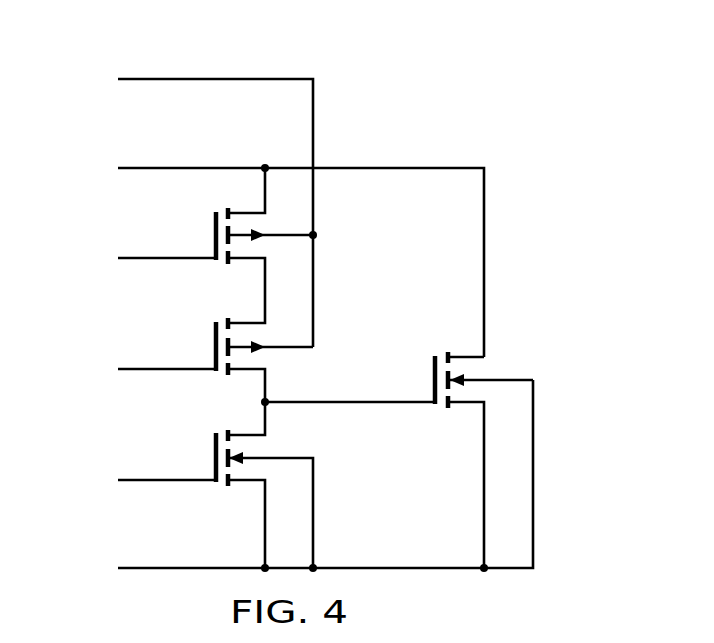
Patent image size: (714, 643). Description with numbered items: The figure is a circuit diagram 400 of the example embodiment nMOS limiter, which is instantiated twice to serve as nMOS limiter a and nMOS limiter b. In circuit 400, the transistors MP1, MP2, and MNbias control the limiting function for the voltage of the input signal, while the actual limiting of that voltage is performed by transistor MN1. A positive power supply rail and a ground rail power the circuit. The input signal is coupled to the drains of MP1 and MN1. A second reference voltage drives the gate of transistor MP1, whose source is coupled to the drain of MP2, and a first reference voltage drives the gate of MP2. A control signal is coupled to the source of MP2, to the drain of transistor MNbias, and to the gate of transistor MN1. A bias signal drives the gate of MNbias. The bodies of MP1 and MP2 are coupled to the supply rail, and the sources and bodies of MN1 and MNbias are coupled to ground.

The circuit diagram 400 is at (398, 64).
The transistor MP1 is at (240, 236).
The transistor MP2 is at (238, 346).
The transistor MNbias is at (223, 499).
The transistor MN1 is at (457, 380).